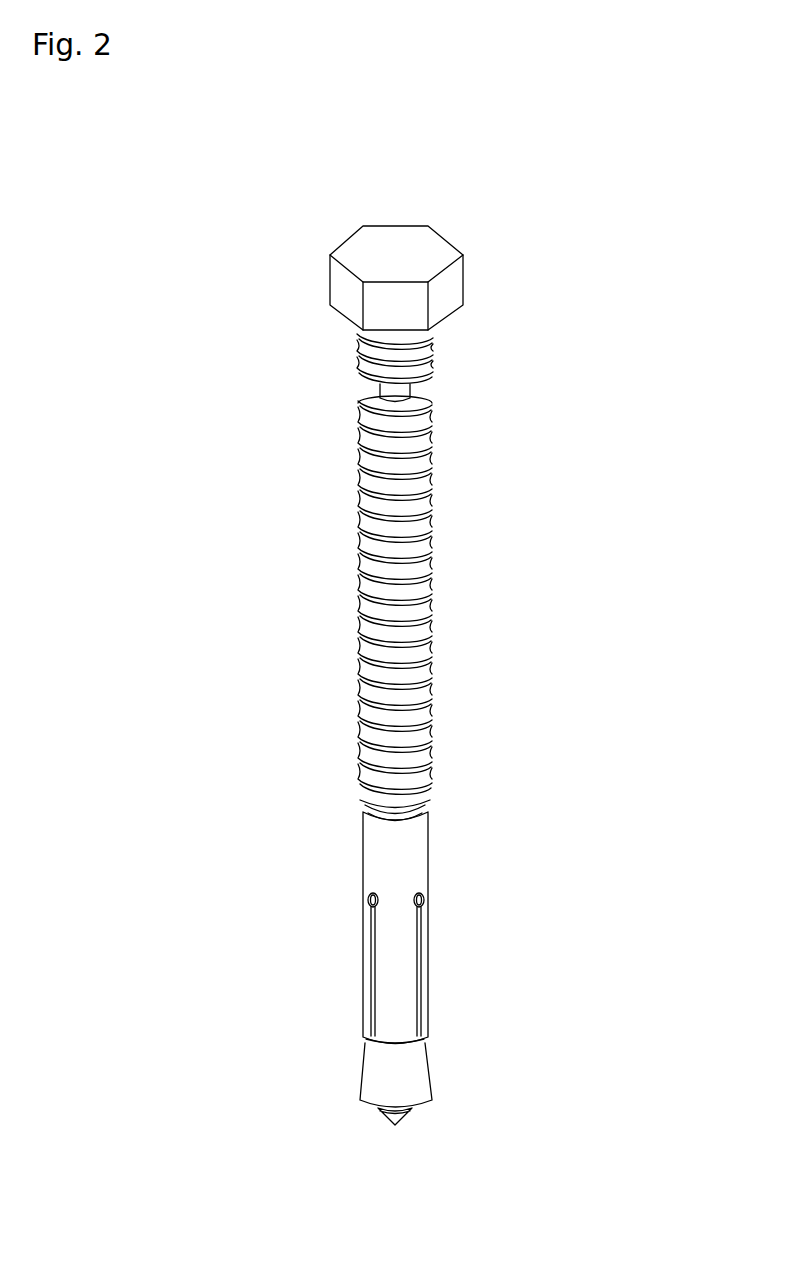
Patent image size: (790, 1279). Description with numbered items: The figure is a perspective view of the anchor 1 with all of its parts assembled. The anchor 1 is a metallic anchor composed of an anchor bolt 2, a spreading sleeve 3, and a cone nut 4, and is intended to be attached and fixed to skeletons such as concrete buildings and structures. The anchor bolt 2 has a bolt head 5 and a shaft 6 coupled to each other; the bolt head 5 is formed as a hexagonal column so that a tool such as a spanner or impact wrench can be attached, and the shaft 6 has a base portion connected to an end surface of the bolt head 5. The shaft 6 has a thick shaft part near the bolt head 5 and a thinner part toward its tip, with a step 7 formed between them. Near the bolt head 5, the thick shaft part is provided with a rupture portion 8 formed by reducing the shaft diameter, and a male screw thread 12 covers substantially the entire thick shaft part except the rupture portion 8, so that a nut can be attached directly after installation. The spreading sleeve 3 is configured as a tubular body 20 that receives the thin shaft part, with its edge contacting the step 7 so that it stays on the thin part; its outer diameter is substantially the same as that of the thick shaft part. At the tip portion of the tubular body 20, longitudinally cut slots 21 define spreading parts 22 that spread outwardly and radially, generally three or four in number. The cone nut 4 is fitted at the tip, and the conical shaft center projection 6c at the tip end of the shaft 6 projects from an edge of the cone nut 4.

The anchor 1 is at (262, 174).
The anchor bolt 2 is at (320, 384).
The spreading sleeve 3 is at (323, 866).
The cone nut 4 is at (323, 1059).
The bolt head 5 is at (430, 243).
The shaft 6 is at (512, 666).
The shaft center projection 6c is at (407, 1128).
The step 7 is at (428, 823).
The rupture portion 8 is at (423, 390).
The male screw thread 12 is at (413, 568).
The tubular body 20 is at (430, 880).
The slots 21 is at (372, 947).
The spreading parts 22 is at (364, 988).